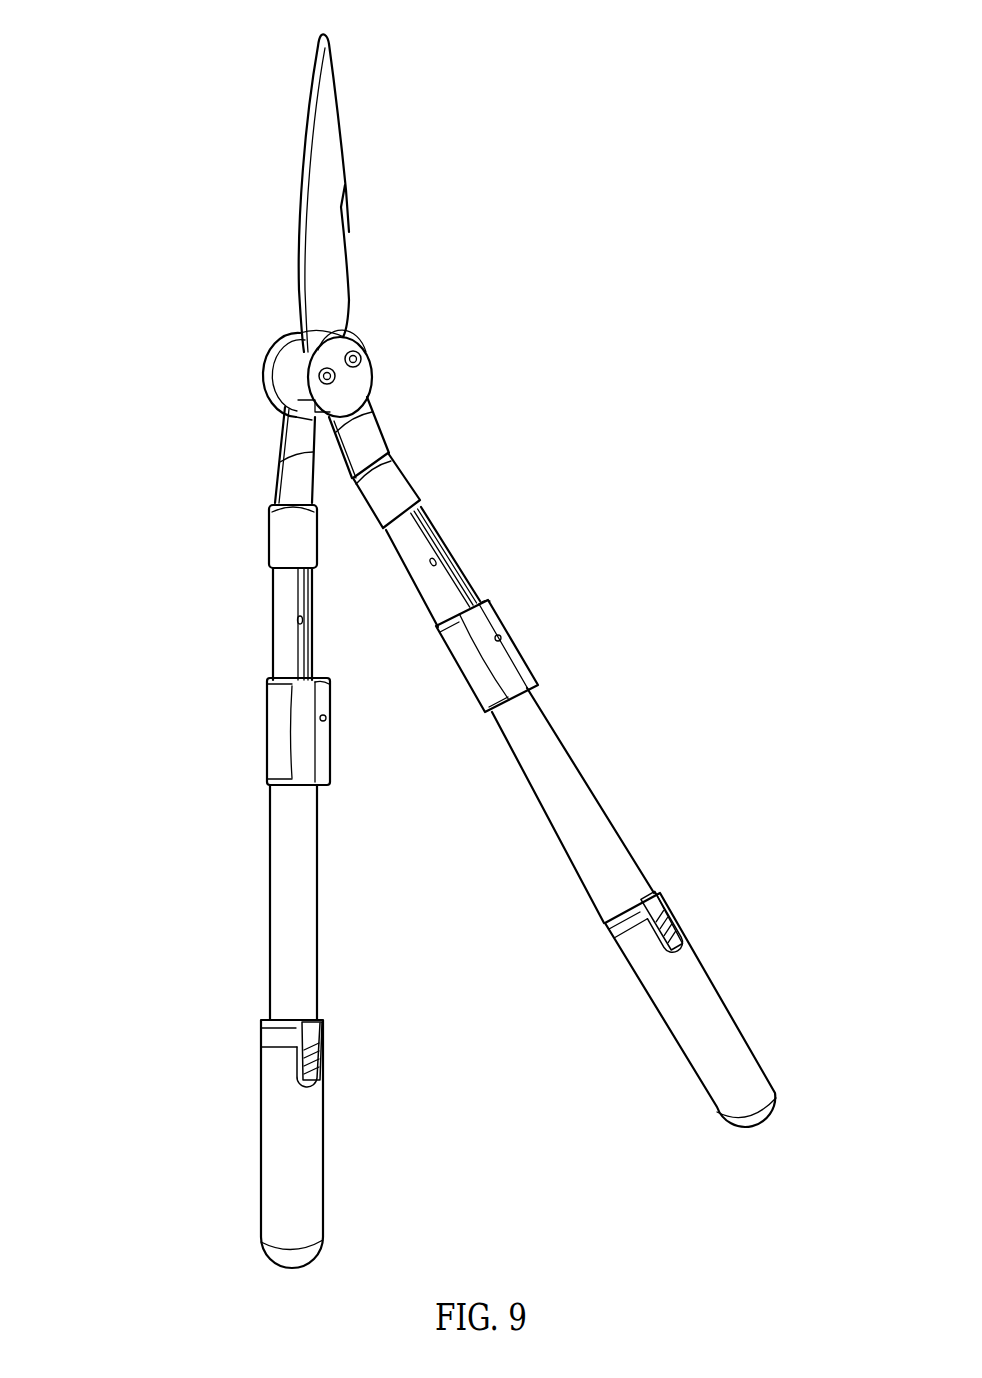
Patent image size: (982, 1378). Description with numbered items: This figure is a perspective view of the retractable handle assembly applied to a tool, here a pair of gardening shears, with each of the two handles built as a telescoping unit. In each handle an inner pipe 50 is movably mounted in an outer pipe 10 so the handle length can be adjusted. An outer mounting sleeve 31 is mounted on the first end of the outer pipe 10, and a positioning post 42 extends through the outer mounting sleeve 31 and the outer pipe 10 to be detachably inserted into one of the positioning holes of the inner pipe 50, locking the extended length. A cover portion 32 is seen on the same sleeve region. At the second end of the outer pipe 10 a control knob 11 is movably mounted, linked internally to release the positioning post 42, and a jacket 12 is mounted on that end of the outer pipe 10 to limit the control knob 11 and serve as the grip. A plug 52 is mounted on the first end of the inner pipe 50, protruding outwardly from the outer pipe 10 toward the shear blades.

The outer pipe 10 is at (317, 876).
The control knob 11 is at (318, 1043).
The jacket 12 is at (263, 1137).
The outer mounting sleeve 31 is at (265, 743).
The lock cover 32 is at (330, 743).
The positioning post 42 is at (505, 635).
The inner pipe 50 is at (273, 595).
The plug 52 is at (405, 473).